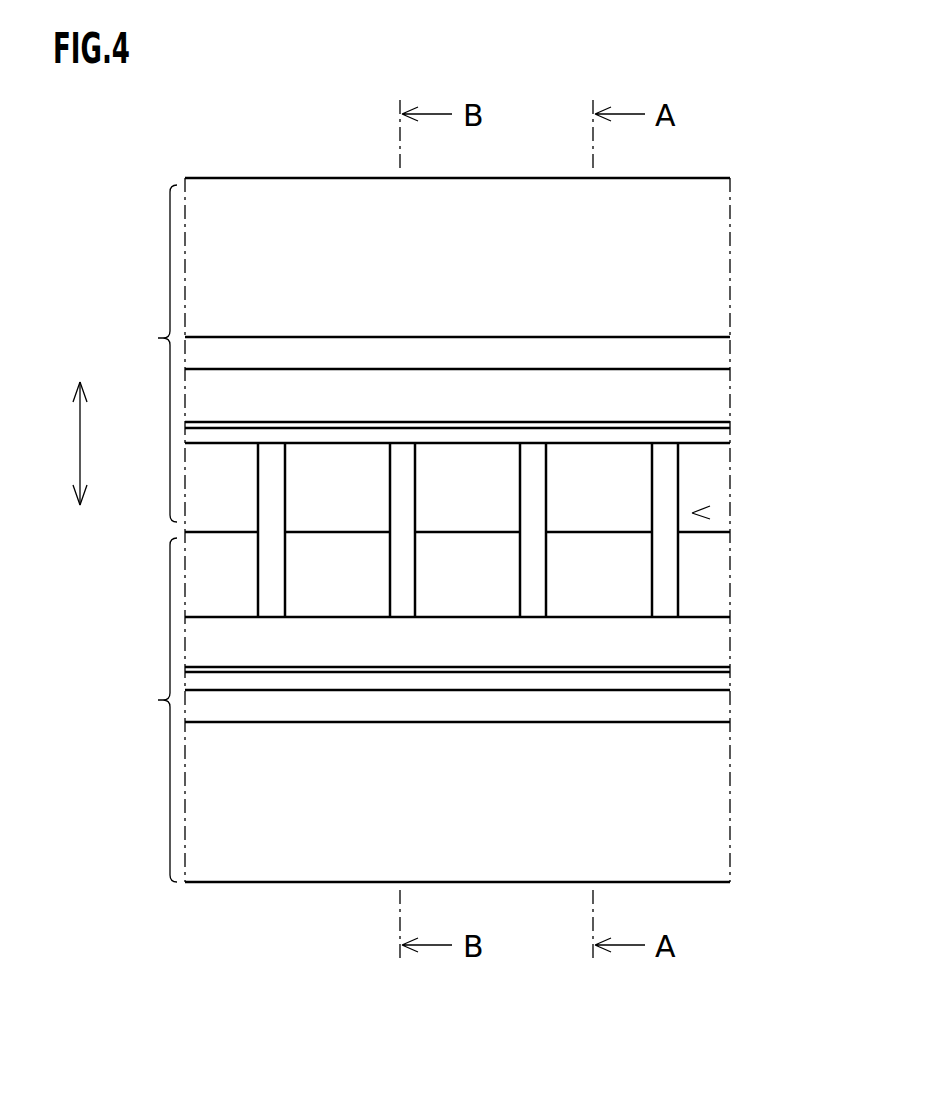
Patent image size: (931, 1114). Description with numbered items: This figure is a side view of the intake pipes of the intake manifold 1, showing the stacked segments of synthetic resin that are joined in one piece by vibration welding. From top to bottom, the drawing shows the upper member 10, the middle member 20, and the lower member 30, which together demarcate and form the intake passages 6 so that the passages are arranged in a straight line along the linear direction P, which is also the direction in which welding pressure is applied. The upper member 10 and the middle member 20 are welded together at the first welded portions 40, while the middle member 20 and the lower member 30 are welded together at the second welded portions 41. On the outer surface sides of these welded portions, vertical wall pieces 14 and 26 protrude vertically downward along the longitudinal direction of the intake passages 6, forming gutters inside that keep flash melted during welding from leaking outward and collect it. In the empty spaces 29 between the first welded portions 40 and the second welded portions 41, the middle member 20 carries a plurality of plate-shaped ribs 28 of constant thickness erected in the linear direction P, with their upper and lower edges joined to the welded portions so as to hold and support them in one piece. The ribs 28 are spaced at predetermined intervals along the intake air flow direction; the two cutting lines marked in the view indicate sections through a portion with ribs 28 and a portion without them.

The intake manifold 1 is at (706, 162).
The upper member 10 is at (730, 232).
The intake passages 6 is at (151, 533).
The first welded portions 40 is at (700, 401).
The vertical wall piece 14 is at (715, 410).
The middle member 20 is at (730, 566).
The ribs 28 is at (403, 554).
The empty spaces 29 is at (692, 513).
The second welded portions 41 is at (685, 653).
The vertical wall piece 26 is at (705, 658).
The lower member 30 is at (730, 802).
The linear direction P is at (80, 445).